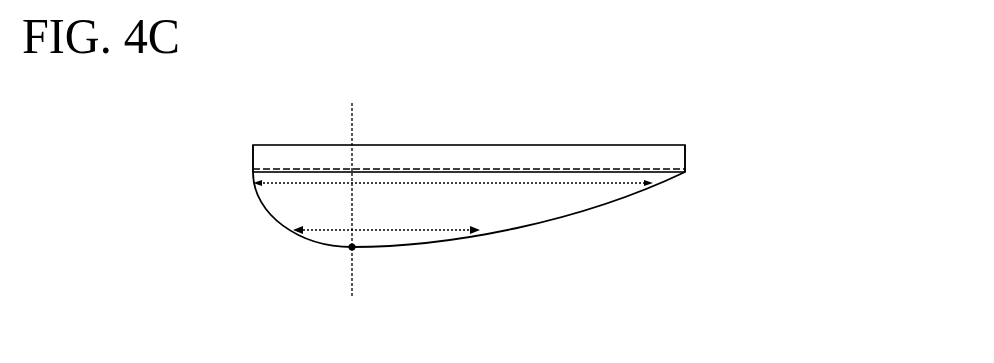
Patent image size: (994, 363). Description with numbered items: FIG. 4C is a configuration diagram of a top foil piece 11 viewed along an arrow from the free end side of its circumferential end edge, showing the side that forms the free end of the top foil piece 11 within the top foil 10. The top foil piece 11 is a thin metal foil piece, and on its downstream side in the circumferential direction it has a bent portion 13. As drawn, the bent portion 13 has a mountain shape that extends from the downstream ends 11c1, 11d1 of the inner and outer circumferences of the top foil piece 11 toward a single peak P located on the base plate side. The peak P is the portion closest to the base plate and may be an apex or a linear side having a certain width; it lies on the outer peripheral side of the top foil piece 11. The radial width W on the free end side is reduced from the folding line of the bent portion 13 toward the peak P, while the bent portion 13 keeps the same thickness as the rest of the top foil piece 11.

The top foil 10 is at (452, 136).
The top foil piece 11 is at (407, 147).
The downstream end of the inner circumference 11c1 is at (698, 153).
The downstream end of the outer circumference 11d1 is at (242, 158).
The bent portion 13 is at (548, 218).
The peak P is at (355, 249).
The width in the radial direction W is at (428, 186).